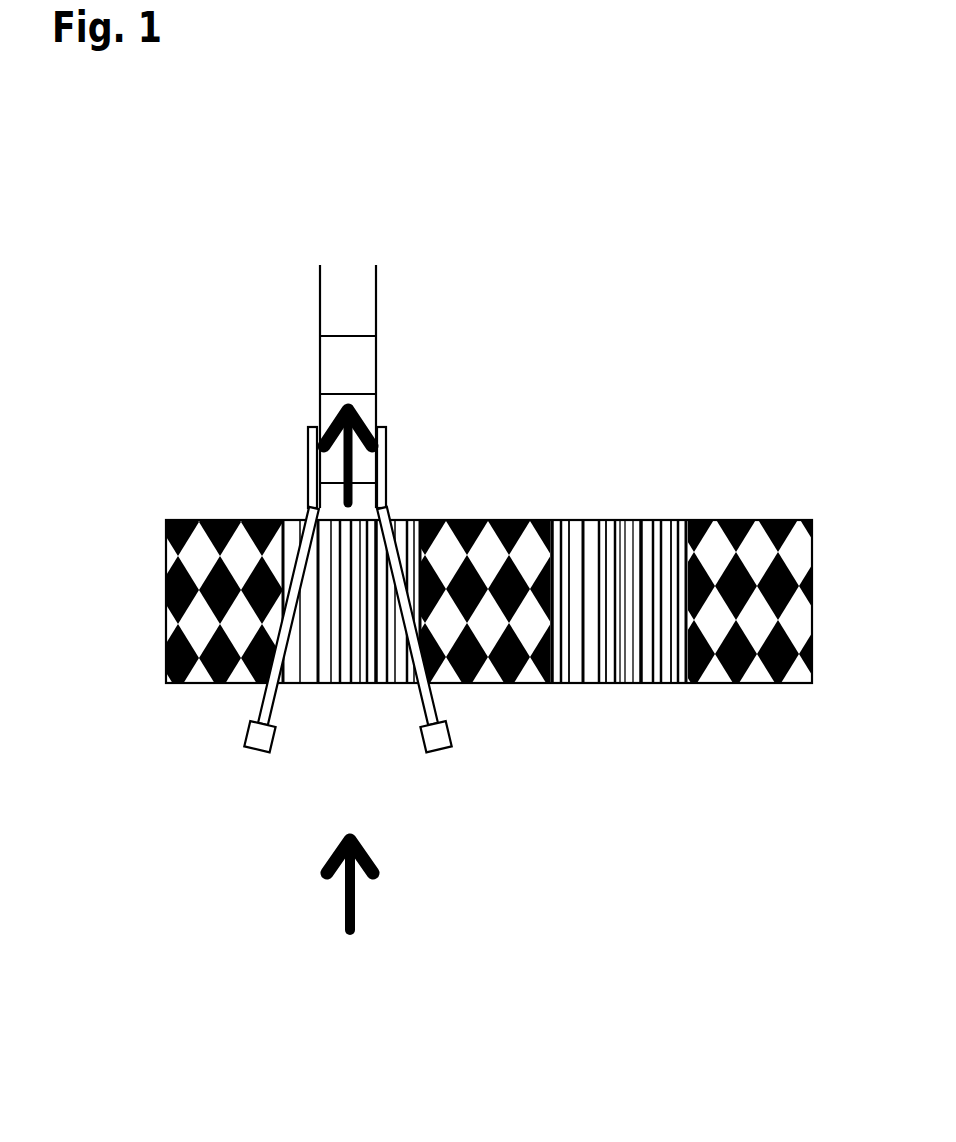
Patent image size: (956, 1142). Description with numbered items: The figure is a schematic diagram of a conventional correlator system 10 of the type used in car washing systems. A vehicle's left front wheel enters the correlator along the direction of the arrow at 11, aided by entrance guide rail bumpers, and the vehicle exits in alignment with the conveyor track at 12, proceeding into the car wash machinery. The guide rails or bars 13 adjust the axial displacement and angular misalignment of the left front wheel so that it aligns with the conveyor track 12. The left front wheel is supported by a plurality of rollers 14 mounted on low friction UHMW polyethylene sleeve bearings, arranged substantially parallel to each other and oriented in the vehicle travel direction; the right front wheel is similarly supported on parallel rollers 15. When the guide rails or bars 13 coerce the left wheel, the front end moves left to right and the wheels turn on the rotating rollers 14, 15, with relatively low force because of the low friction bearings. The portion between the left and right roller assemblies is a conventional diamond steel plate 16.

The conventional correlator system 10 is at (708, 247).
The vehicle entrance direction arrow 11 is at (432, 757).
The conveyor track 12 is at (377, 383).
The guide rails or bars 13 is at (413, 663).
The rollers 14 is at (400, 520).
The parallel rollers 15 is at (625, 520).
The diamond steel plate 16 is at (195, 520).